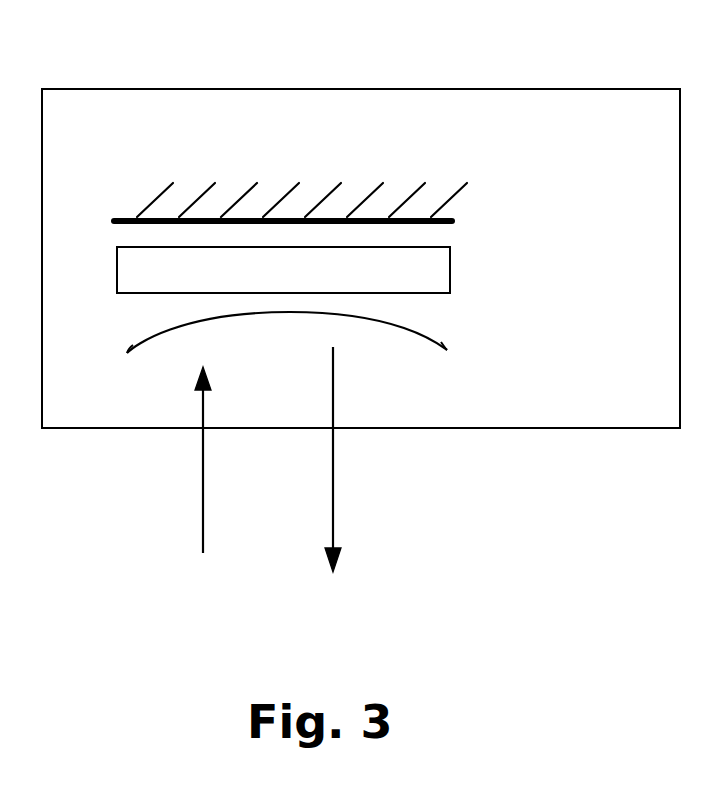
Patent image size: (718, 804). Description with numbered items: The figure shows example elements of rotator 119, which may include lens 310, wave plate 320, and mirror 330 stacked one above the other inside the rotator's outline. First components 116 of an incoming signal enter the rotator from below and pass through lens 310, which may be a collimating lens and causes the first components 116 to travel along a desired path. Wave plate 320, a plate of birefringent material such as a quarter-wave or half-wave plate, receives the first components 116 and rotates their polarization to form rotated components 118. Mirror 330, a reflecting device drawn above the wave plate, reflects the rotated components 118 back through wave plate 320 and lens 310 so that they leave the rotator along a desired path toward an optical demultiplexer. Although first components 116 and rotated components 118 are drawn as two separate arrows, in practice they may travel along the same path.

The rotator 119 is at (520, 61).
The mirror 330 is at (452, 222).
The wave plate 320 is at (450, 273).
The lens 310 is at (442, 343).
The first components 116 is at (203, 508).
The rotated components 118 is at (333, 497).